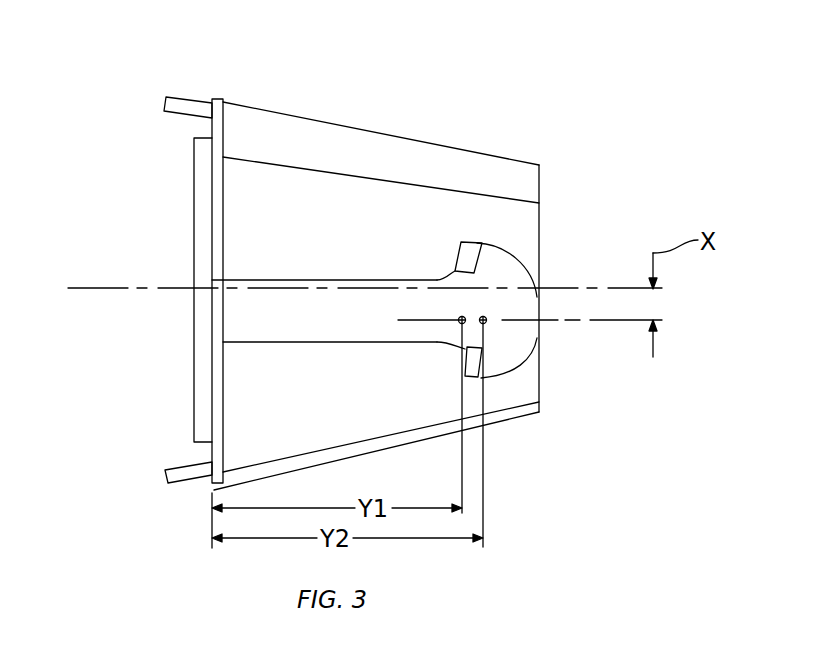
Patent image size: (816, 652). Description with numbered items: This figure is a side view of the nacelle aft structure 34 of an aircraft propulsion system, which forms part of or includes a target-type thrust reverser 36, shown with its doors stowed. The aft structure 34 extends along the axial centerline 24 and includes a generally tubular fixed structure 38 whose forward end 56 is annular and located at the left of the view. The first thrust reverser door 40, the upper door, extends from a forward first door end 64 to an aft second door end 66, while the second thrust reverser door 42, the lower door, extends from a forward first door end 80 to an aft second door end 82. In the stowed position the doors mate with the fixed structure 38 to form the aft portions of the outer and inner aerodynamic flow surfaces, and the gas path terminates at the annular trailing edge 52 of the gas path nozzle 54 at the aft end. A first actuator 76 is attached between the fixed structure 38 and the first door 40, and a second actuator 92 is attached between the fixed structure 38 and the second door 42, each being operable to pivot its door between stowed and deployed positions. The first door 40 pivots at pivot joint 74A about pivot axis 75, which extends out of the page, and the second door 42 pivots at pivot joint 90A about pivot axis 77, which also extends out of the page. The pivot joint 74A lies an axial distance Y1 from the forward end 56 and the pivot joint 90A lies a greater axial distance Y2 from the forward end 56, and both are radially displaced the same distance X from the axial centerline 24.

The axial centerline 24 is at (103, 288).
The nacelle aft structure 34 is at (533, 125).
The thrust reverser 36 is at (568, 168).
The fixed structure 38 is at (170, 325).
The first thrust reverser door 40 is at (308, 125).
The second thrust reverser door 42 is at (262, 445).
The annular trailing edge 52 is at (539, 393).
The gas path nozzle 54 is at (560, 378).
The fixed structure forward end 56 is at (194, 347).
The first door end 64 is at (222, 197).
The second door end 66 is at (540, 262).
The pivot joint 74A is at (462, 316).
The pivot axis 75 is at (458, 322).
The first actuator 76 is at (180, 100).
The pivot axis 77 is at (485, 323).
The first door end 80 is at (212, 413).
The second door end 82 is at (539, 410).
The pivot joint 90A is at (483, 316).
The second actuator 92 is at (183, 478).